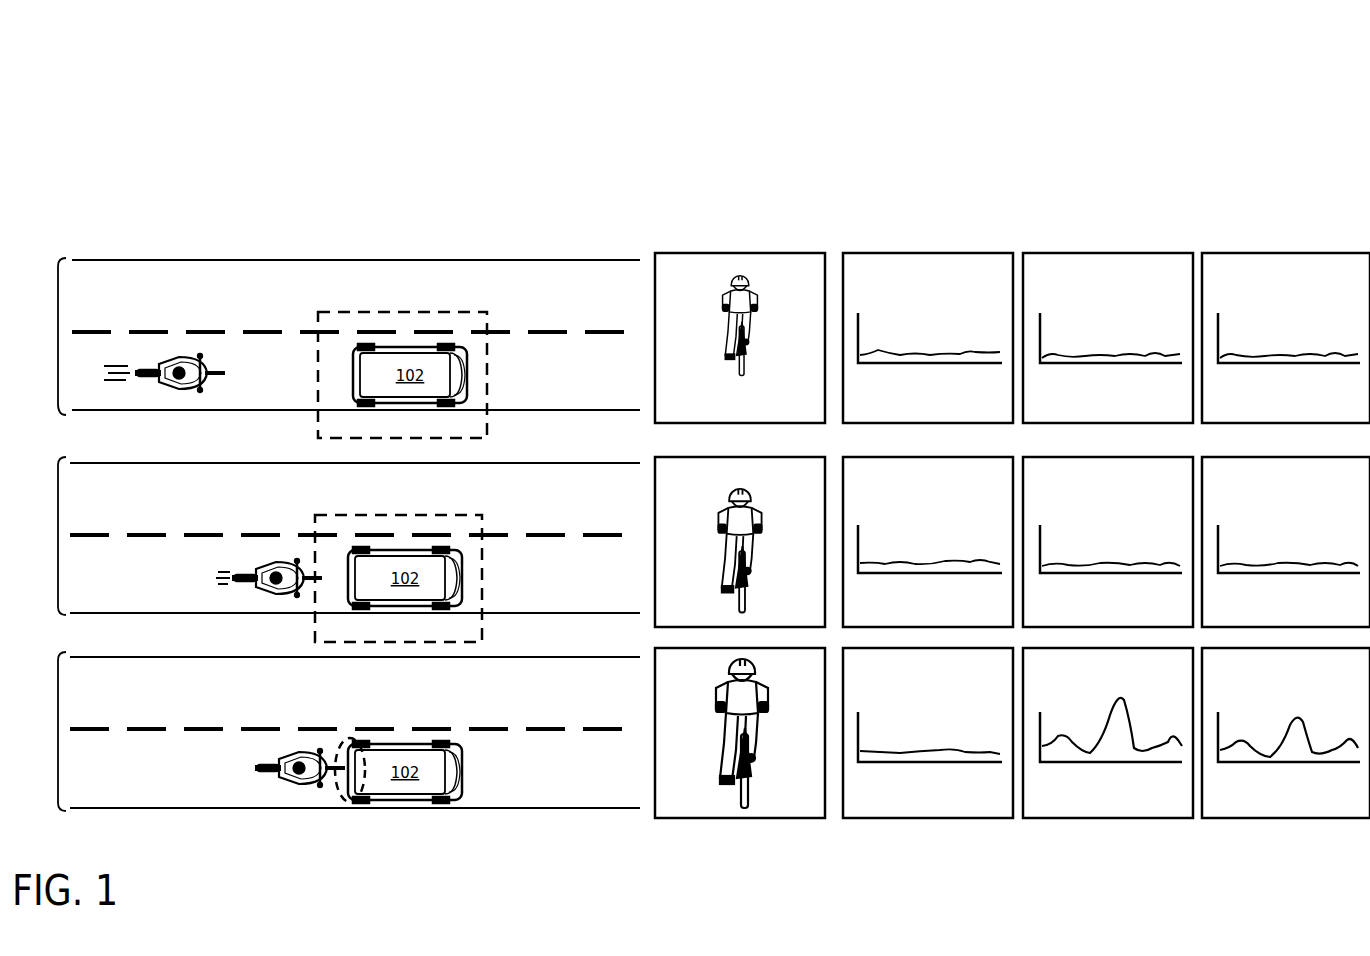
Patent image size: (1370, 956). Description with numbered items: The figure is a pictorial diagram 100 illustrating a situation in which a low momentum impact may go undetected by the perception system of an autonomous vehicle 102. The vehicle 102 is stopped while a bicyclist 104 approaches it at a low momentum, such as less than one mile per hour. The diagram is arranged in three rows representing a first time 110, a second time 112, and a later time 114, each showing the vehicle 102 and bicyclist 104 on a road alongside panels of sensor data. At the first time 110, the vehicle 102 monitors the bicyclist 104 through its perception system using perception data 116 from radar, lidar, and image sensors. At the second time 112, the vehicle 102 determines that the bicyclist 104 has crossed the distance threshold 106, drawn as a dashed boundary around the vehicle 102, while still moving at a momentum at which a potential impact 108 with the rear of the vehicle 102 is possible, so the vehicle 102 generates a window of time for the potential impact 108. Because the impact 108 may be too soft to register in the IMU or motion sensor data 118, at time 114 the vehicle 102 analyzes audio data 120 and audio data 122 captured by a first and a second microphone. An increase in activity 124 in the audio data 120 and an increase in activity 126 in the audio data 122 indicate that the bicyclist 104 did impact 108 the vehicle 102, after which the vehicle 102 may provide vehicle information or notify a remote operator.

The pictorial diagram 100 is at (114, 65).
The autonomous vehicle 102 is at (407, 573).
The bicyclist 104 is at (178, 356).
The distance threshold 106 is at (318, 312).
The impact 108 is at (349, 738).
The first time 110 is at (54, 335).
The second time 112 is at (54, 535).
The time 114 is at (56, 730).
The perception data 116 is at (657, 246).
The motion sensor data 118 is at (845, 246).
The audio data 120 is at (1192, 246).
The audio data 122 is at (1369, 246).
The increase in activity 124 is at (1107, 681).
The increase in activity 126 is at (1286, 702).